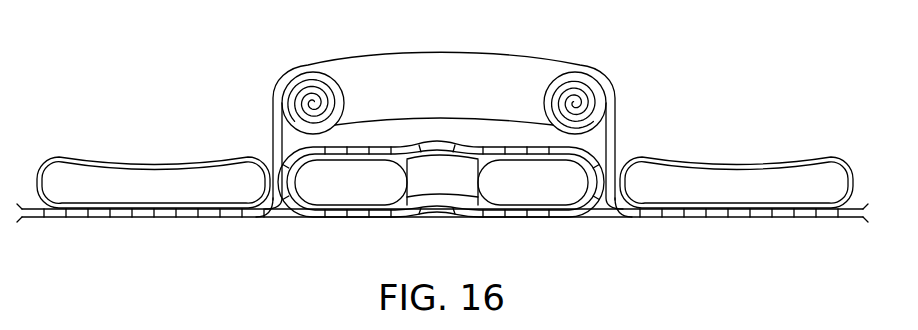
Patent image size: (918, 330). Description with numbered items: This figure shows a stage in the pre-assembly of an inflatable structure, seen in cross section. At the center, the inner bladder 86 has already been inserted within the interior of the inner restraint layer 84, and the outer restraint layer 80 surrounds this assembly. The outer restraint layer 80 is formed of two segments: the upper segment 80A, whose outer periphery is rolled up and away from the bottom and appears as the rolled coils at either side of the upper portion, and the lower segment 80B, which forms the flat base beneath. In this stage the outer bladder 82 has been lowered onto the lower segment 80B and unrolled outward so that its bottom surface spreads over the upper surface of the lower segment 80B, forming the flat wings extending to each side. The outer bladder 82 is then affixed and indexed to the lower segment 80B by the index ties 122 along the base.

The outer restraint layer 80 is at (157, 240).
The upper segment of the outer restraint layer 80A is at (309, 68).
The lower segment of the outer restraint layer 80B is at (100, 217).
The outer bladder 82 is at (157, 160).
The inner restraint layer 84 is at (375, 148).
The inner bladder 86 is at (383, 160).
The index ties 122 is at (196, 217).